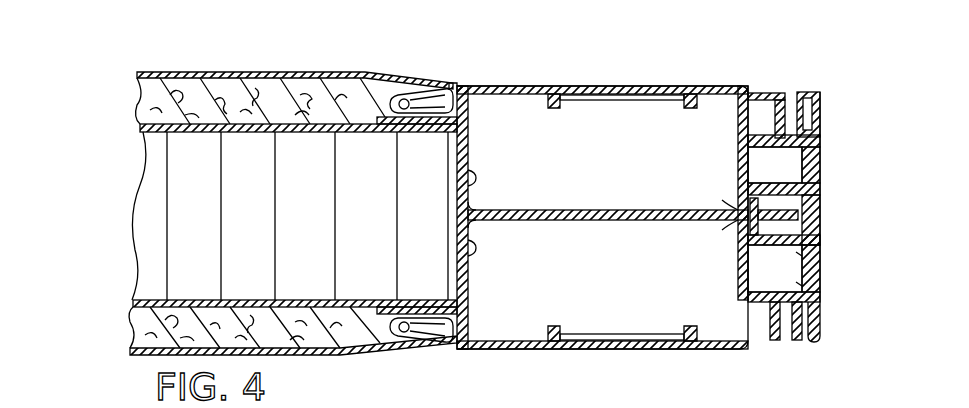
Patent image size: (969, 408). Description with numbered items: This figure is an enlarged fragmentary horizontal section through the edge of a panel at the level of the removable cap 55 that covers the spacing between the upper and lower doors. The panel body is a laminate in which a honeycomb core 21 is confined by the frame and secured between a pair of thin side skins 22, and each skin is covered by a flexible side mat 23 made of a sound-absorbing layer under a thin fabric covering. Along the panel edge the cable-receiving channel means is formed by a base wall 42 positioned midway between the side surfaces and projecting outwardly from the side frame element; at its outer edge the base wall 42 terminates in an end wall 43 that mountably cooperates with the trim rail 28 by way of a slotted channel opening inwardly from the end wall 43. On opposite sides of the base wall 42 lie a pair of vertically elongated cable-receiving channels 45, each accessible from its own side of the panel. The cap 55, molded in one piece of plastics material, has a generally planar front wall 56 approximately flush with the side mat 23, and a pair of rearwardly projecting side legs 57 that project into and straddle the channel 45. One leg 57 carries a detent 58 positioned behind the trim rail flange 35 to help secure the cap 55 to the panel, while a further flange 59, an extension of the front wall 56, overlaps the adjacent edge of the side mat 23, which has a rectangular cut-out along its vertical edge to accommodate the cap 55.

The core 21 is at (142, 227).
The side skins 22 is at (162, 132).
The side mat 23 is at (231, 64).
The trim rail 28 is at (810, 262).
The trim rail flange 35 is at (768, 340).
The base wall 42 is at (600, 188).
The end wall 43 is at (808, 180).
The cable-receiving channels 45 is at (506, 128).
The cap 55 is at (741, 76).
The front wall 56 is at (530, 349).
The side legs 57 is at (476, 292).
The detent 58 is at (762, 307).
The flange 59 is at (452, 342).